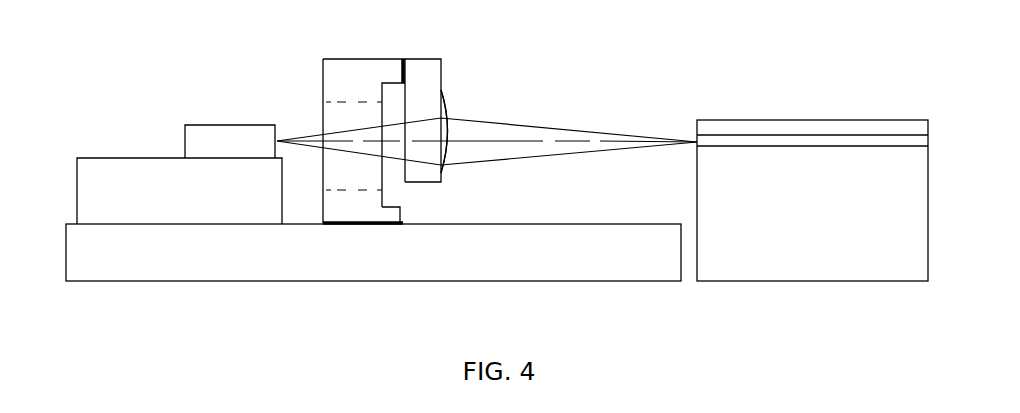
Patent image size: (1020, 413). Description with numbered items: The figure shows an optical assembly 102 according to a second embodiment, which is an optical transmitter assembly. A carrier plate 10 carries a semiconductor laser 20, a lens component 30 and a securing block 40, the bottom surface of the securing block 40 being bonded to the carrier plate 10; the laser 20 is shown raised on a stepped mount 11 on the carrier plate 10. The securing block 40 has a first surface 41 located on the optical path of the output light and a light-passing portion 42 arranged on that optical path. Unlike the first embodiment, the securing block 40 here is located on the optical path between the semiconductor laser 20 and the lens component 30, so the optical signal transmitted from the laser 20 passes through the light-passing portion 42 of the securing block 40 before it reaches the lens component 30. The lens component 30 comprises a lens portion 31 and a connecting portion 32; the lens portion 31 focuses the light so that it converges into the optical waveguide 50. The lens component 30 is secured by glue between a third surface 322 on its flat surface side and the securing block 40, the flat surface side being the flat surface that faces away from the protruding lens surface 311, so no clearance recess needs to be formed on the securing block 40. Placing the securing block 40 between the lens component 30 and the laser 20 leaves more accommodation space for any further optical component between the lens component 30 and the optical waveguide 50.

The optical assembly 102 is at (61, 44).
The carrier plate 10 is at (160, 268).
The mounting platform 11 is at (148, 170).
The semiconductor laser 20 is at (225, 135).
The lens component 30 is at (422, 57).
The lens portion 31 is at (447, 162).
The protruding lens surface 311 is at (450, 127).
The connecting portion 32 is at (437, 90).
The third surface 322 is at (403, 90).
The securing block 40 is at (337, 63).
The first surface 41 is at (402, 212).
The light-passing portion 42 is at (323, 118).
The optical waveguide 50 is at (737, 132).